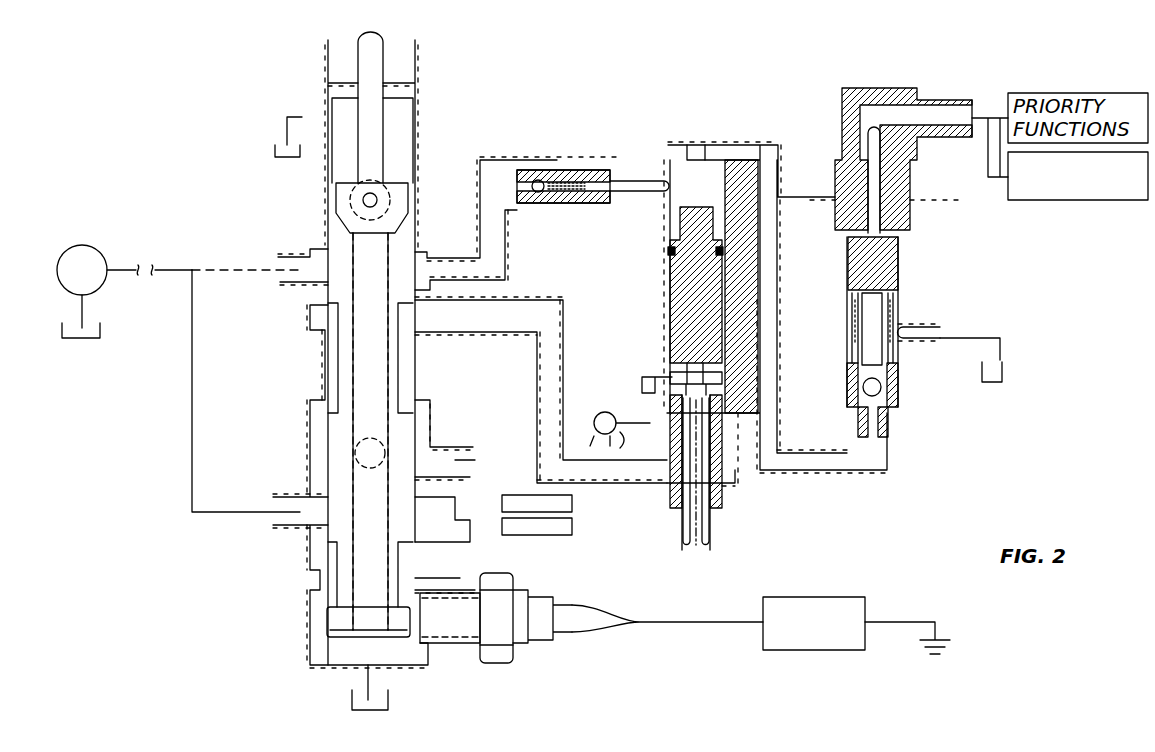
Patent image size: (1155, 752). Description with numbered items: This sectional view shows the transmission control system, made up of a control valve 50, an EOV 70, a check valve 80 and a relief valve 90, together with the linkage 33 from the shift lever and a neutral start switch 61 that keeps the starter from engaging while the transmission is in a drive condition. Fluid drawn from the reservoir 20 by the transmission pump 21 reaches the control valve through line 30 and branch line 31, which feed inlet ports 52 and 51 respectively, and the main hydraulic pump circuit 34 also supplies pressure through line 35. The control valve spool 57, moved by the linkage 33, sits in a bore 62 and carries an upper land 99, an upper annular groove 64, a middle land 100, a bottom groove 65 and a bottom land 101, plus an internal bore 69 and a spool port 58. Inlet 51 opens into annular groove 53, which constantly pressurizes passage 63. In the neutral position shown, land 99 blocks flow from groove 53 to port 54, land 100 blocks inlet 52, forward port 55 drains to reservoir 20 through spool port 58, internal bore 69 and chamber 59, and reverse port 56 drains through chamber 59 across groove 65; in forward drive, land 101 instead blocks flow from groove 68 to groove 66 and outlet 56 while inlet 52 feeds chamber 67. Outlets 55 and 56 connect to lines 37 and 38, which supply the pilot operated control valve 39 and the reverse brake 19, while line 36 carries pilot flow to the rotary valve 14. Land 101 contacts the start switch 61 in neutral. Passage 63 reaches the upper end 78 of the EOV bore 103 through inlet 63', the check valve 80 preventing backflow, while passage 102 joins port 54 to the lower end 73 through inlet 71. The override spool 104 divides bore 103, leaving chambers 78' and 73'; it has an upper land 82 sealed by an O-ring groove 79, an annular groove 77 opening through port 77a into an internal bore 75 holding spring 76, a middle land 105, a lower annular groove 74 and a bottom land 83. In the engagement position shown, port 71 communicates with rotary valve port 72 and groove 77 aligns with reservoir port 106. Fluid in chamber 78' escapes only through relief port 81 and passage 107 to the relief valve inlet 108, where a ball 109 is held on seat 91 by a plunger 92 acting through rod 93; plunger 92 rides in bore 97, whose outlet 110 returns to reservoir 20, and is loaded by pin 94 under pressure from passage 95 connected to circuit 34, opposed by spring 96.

The rotary valve 14 is at (598, 430).
The reverse brake 19 is at (560, 535).
The reservoir 20 is at (380, 712).
The transmission pump 21 is at (90, 246).
The line 30 is at (240, 512).
The branch line 31 is at (238, 266).
The control valve linkage 33 is at (383, 130).
The main hydraulic pump circuit 34 is at (1100, 200).
The line 35 is at (1000, 180).
The line 36 is at (644, 445).
The line 37 is at (502, 502).
The line 38 is at (482, 552).
The pilot operated control valve 39 is at (572, 503).
The control valve 50 is at (310, 382).
The inlet port 51 is at (285, 278).
The inlet port 52 is at (276, 518).
The annular groove 53 is at (432, 252).
The port 54 is at (455, 326).
The forward port 55 is at (470, 455).
The reverse port 56 is at (440, 535).
The valve spool 57 is at (340, 352).
The spool port 58 is at (356, 448).
The chamber 59 is at (342, 666).
The neutral start switch 61 is at (497, 663).
The bore 62 is at (328, 178).
The passage 63 is at (530, 245).
The inlet 63' is at (627, 217).
The upper annular groove 64 is at (432, 355).
The bottom groove 65 is at (398, 586).
The groove 66 is at (312, 553).
The chamber 67 is at (430, 400).
The groove 68 is at (363, 560).
The internal bore 69 is at (382, 258).
The EOV 70 is at (656, 281).
The inlet 71 is at (653, 478).
The rotary valve port 72 is at (645, 415).
The lower end 73 is at (741, 472).
The chamber 73' is at (662, 489).
The lower annular groove 74 is at (718, 455).
The internal bore 75 is at (697, 548).
The spring 76 is at (709, 540).
The annular groove 77 is at (752, 365).
The port 77a is at (690, 355).
The upper end 78 is at (742, 286).
The chamber 78' is at (709, 134).
The O-ring groove 79 is at (722, 250).
The check valve 80 is at (592, 133).
The relief port 81 is at (735, 145).
The upper land portion 82 is at (668, 262).
The bottom land 83 is at (727, 488).
The relief valve 90 is at (920, 258).
The seat 91 is at (898, 398).
The plunger 92 is at (880, 255).
The rod 93 is at (866, 340).
The pin 94 is at (875, 188).
The passage 95 is at (945, 137).
The spring 96 is at (902, 310).
The relief valve bore 97 is at (905, 278).
The upper land portion 99 is at (423, 225).
The middle land 100 is at (428, 425).
The bottom land 101 is at (327, 622).
The passage 102 is at (565, 328).
The bore 103 is at (725, 290).
The override spool 104 is at (685, 288).
The middle land 105 is at (740, 400).
The reservoir outlet 106 is at (650, 366).
The passage 107 is at (782, 303).
The relief valve inlet 108 is at (880, 430).
The ball 109 is at (882, 385).
The outlet 110 is at (940, 330).